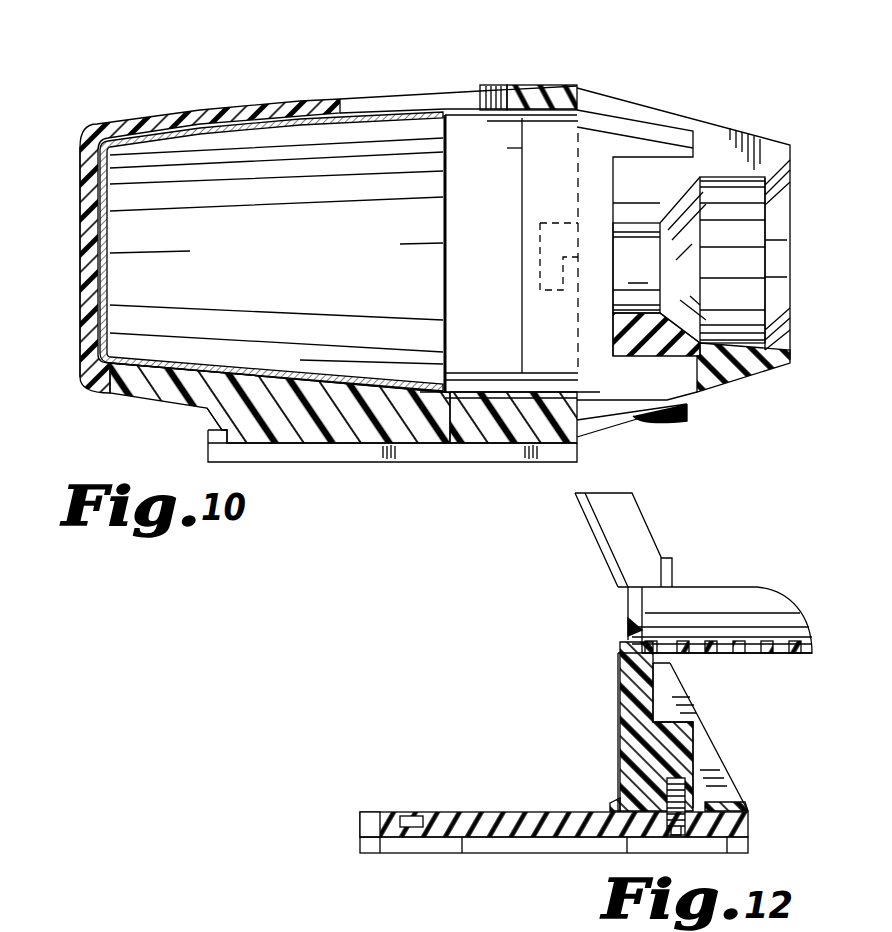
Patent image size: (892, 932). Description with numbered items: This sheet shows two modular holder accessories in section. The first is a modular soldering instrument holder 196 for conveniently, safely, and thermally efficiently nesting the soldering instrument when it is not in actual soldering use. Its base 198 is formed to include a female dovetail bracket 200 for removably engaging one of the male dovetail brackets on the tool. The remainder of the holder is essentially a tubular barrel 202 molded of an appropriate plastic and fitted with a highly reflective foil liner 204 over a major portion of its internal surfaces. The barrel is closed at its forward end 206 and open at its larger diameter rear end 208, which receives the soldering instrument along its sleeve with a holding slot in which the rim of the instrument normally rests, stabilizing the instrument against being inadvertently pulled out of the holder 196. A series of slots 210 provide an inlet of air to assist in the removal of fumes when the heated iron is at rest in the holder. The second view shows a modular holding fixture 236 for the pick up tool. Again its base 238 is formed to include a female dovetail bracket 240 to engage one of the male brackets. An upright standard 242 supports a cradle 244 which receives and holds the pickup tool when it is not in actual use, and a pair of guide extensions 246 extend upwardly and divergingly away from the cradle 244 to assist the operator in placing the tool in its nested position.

In FIG. 10, the modular soldering instrument holder 196 is at (180, 92).
In FIG. 10, the base 198 is at (213, 410).
In FIG. 10, the female dovetail bracket 200 is at (208, 450).
In FIG. 10, the tubular barrel 202 is at (210, 380).
In FIG. 10, the highly reflective foil liner 204 is at (127, 370).
In FIG. 10, the forward end 206 is at (80, 208).
In FIG. 10, the rear end 208 is at (793, 365).
In FIG. 10, the slots 210 is at (478, 87).
In FIG. 12, the modular holding fixture 236 is at (529, 790).
In FIG. 12, the base 238 is at (360, 822).
In FIG. 12, the female dovetail bracket 240 is at (360, 843).
In FIG. 12, the upright standard 242 is at (620, 702).
In FIG. 12, the cradle 244 is at (737, 654).
In FIG. 12, the guide extensions 246 is at (590, 530).